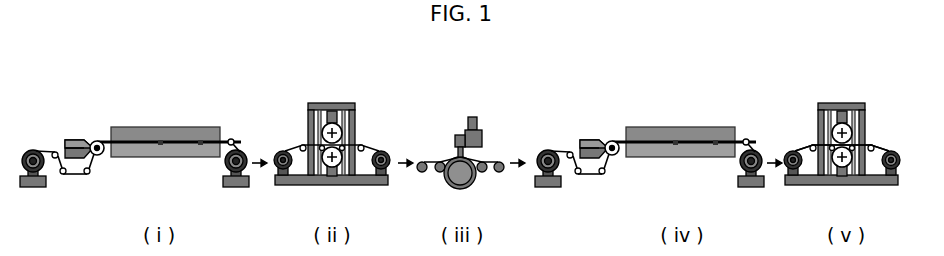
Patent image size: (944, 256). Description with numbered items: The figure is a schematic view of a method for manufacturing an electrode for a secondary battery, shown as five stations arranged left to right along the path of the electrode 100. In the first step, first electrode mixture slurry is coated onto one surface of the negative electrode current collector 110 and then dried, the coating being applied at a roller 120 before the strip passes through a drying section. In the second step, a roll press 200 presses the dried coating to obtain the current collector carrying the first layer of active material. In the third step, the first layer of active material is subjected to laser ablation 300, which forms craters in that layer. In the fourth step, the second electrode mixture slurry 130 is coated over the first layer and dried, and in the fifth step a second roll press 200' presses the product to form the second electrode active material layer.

The electrode sheet 100 is at (875, 147).
The negative electrode current collector 110 is at (73, 176).
The first coating roller 120 is at (98, 140).
The second electrode mixture slurry 130 is at (612, 140).
The roll press 200 is at (332, 125).
The roll press 200' is at (842, 125).
The laser ablation 300 is at (471, 117).